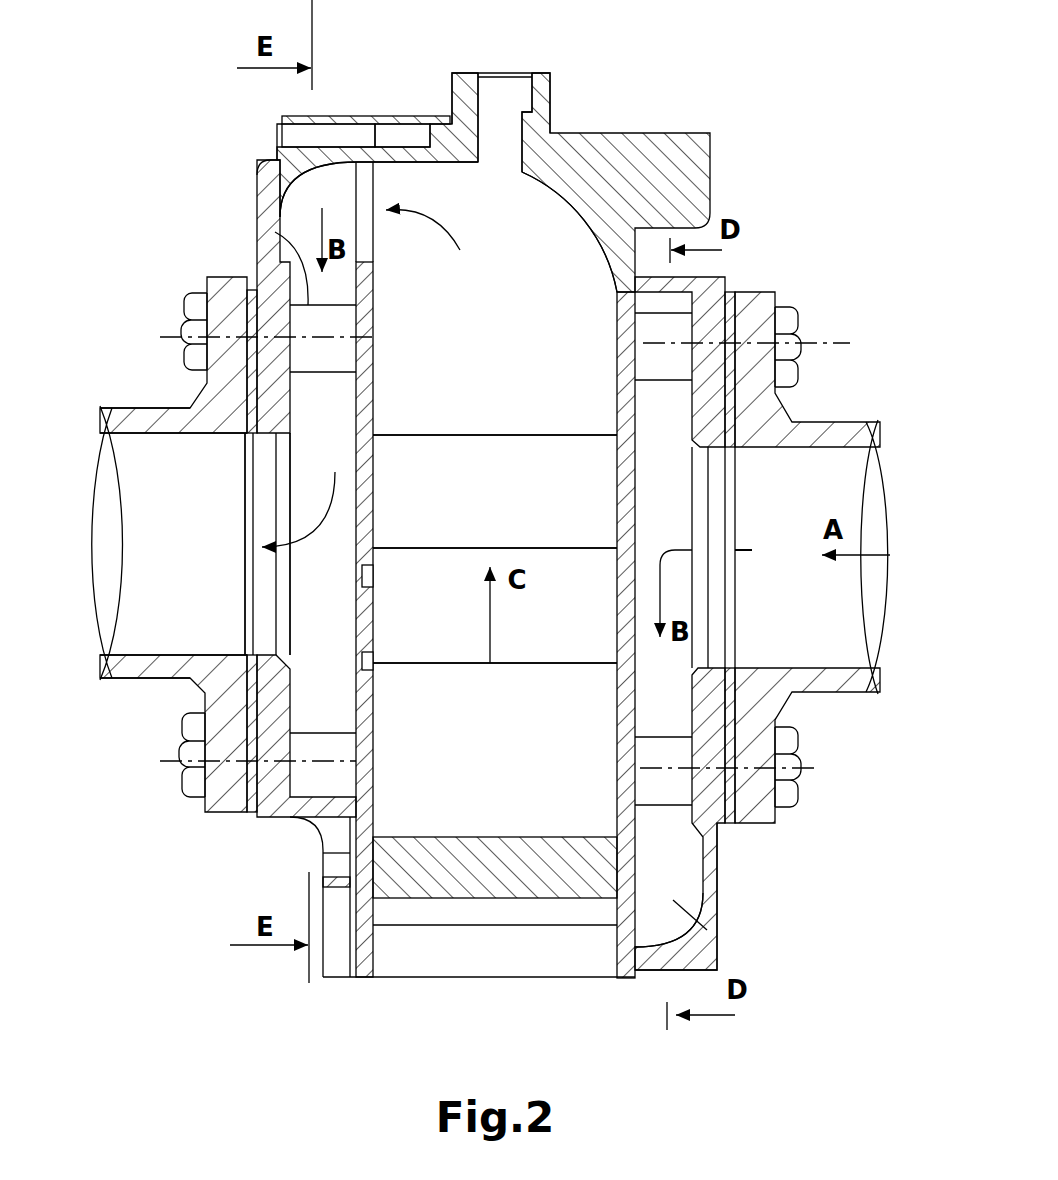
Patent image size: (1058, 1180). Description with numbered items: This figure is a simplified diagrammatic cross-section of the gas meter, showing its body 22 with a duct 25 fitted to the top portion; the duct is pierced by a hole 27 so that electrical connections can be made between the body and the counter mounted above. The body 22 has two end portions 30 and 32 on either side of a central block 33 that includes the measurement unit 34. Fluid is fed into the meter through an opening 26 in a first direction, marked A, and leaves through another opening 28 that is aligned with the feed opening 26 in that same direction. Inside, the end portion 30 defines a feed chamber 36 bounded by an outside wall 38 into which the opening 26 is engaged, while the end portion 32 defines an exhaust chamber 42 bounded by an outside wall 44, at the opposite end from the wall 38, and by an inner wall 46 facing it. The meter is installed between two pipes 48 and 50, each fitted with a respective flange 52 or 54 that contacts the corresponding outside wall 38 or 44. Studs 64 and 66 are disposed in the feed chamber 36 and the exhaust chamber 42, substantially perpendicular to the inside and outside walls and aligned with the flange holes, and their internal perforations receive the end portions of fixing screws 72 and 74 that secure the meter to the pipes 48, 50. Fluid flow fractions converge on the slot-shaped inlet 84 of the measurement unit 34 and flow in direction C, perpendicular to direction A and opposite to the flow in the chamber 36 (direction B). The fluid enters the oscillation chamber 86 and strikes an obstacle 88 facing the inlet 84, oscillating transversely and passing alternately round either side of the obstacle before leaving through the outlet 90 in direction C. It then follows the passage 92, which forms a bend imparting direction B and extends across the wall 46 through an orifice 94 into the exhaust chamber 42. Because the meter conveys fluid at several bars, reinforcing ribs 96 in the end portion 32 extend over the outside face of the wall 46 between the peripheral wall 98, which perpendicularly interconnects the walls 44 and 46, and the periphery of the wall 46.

The body 22 is at (465, 993).
The duct 25 is at (548, 95).
The opening 26 is at (737, 640).
The hole 27 is at (485, 100).
The opening 28 is at (267, 638).
The end portion 30 is at (717, 920).
The end portion 32 is at (277, 823).
The central block 33 is at (622, 133).
The measurement unit 34 is at (590, 424).
The feed chamber 36 is at (717, 943).
The outside wall 38 is at (717, 847).
The exhaust chamber 42 is at (310, 702).
The outside wall 44 is at (247, 778).
The wall 46 is at (352, 443).
The pipe 48 is at (840, 422).
The pipe 50 is at (163, 408).
The flange 52 is at (700, 292).
The flange 54 is at (223, 277).
The stud 64 is at (680, 313).
The stud 66 is at (258, 221).
The screw 72 is at (798, 322).
The screw 74 is at (183, 317).
The inlet 84 is at (528, 663).
The oscillation chamber 86 is at (597, 577).
The obstacle 88 is at (605, 487).
The outlet 90 is at (615, 222).
The passage 92 is at (415, 190).
The orifice 94 is at (357, 193).
The reinforcing rib 96 is at (325, 853).
The peripheral wall 98 is at (325, 835).